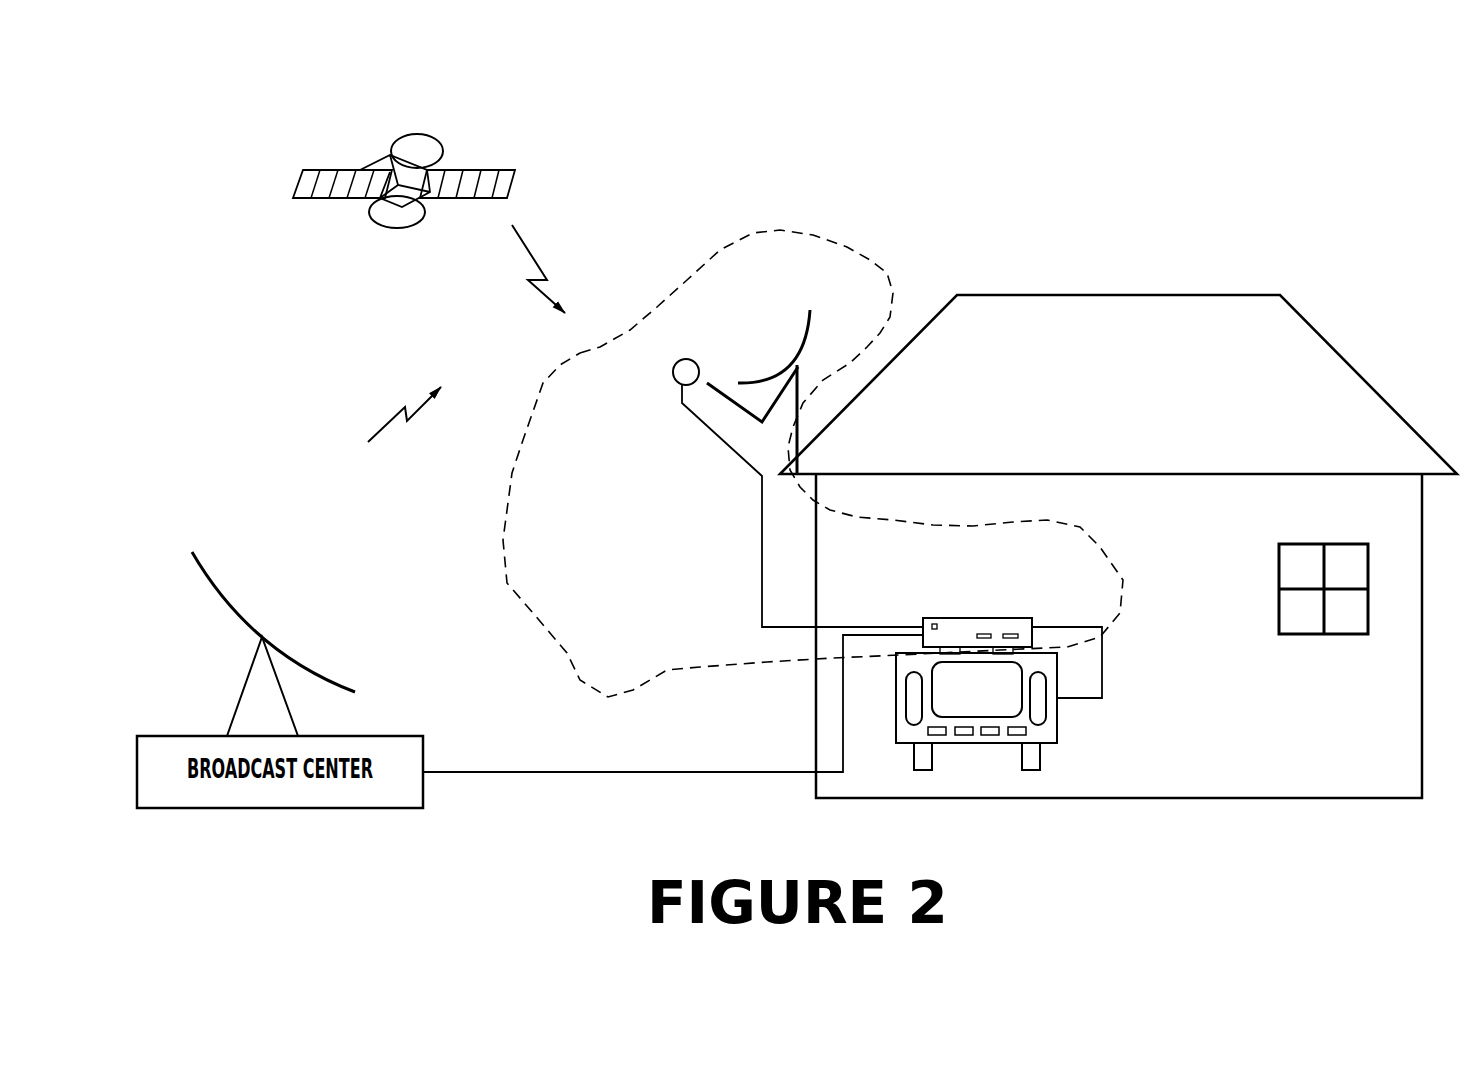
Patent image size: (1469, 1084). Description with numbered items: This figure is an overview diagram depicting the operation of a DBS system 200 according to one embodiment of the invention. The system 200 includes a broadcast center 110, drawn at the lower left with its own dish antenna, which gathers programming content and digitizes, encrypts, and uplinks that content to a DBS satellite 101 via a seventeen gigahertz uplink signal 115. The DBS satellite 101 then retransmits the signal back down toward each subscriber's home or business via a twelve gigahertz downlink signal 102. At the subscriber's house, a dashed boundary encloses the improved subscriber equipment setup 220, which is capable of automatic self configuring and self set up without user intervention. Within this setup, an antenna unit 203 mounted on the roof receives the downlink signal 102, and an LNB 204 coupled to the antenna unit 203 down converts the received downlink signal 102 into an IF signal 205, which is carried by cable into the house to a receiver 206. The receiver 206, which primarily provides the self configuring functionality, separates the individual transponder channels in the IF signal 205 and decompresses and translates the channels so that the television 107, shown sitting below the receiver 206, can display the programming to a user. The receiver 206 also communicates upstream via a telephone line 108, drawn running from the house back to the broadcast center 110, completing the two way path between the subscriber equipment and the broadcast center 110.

The DBS system 200 is at (144, 112).
The DBS satellite 101 is at (397, 134).
The 12 GHz downlink signal 102 is at (592, 240).
The 17 GHz uplink signal 115 is at (313, 371).
The broadcast center 110 is at (188, 656).
The telephone line 108 is at (500, 768).
The subscriber equipment setup 220 is at (500, 548).
The antenna unit 203 is at (827, 271).
The LNB 204 is at (672, 380).
The IF signal 205 is at (759, 583).
The receiver 206 is at (1008, 579).
The television 107 is at (1052, 753).